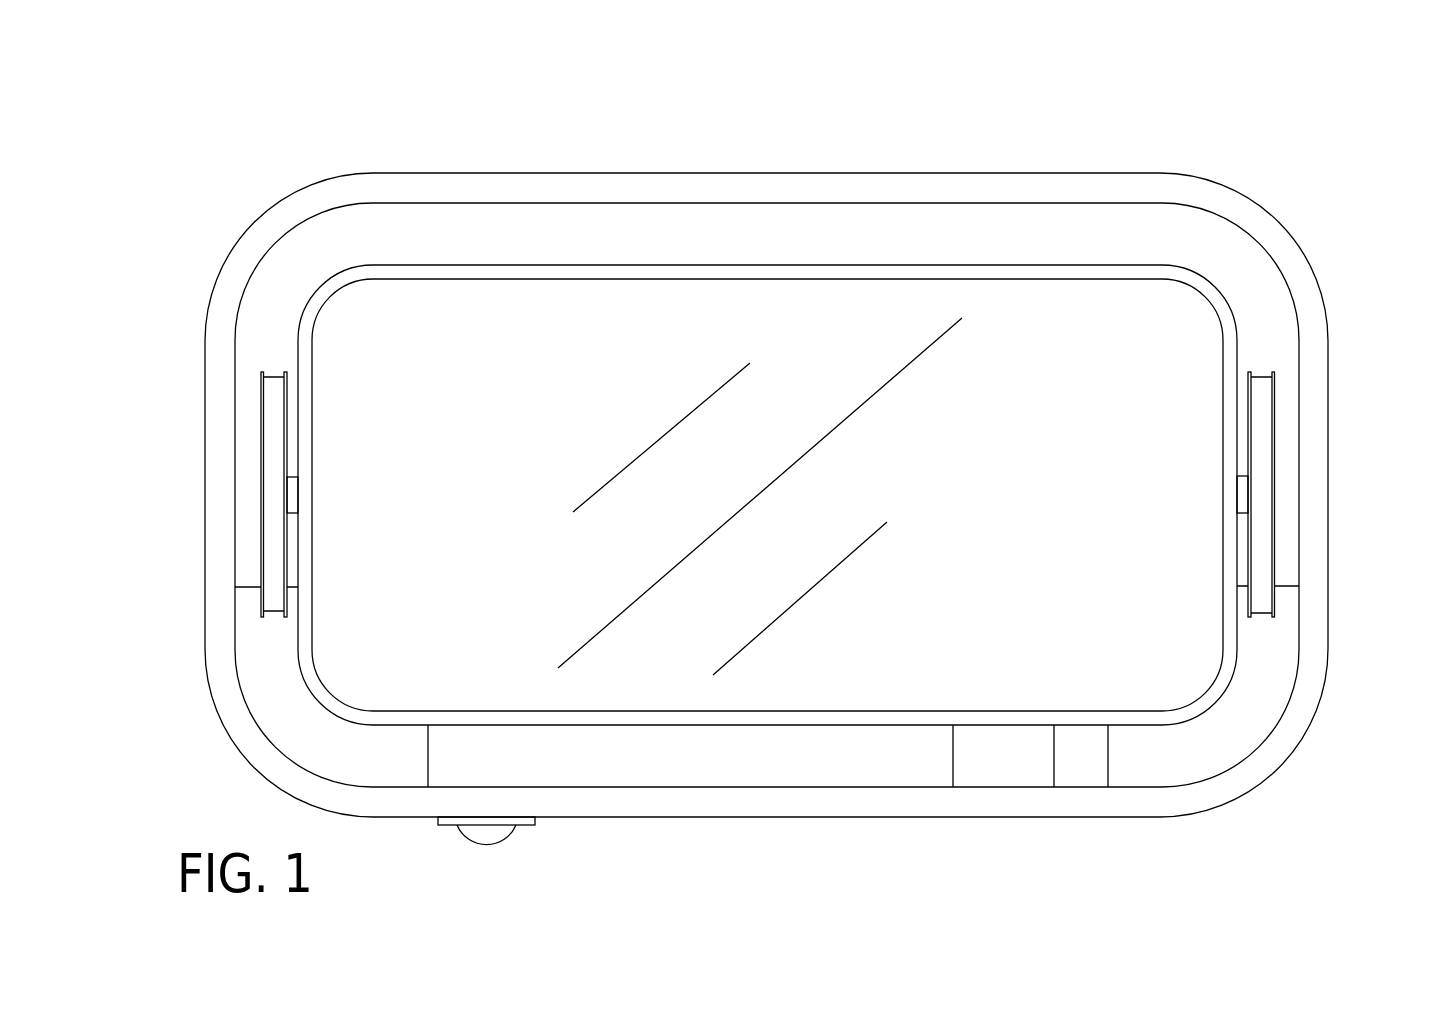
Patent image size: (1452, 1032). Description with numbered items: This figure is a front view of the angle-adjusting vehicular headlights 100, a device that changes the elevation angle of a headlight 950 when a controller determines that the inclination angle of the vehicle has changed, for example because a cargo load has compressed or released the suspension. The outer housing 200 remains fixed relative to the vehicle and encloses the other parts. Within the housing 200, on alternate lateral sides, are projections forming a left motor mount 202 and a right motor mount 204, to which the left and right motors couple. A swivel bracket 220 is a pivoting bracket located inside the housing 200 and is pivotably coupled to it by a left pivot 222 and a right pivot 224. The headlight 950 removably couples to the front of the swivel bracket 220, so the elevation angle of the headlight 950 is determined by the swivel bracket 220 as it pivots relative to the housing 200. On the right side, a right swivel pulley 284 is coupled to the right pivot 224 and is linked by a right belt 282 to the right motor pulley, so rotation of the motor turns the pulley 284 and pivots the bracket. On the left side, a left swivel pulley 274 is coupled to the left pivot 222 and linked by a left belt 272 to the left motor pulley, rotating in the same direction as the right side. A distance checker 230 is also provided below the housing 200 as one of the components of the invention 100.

The angle-adjusting vehicular headlights 100 is at (188, 124).
The housing 200 is at (1090, 175).
The left motor mount 202 is at (1258, 722).
The right motor mount 204 is at (255, 675).
The swivel bracket 220 is at (303, 312).
The left pivot 222 is at (1243, 493).
The right pivot 224 is at (293, 500).
The distance checker 230 is at (490, 838).
The left belt 272 is at (1260, 397).
The left swivel pulley 274 is at (1273, 417).
The right belt 282 is at (273, 397).
The right swivel pulley 284 is at (260, 447).
The headlight 950 is at (817, 685).